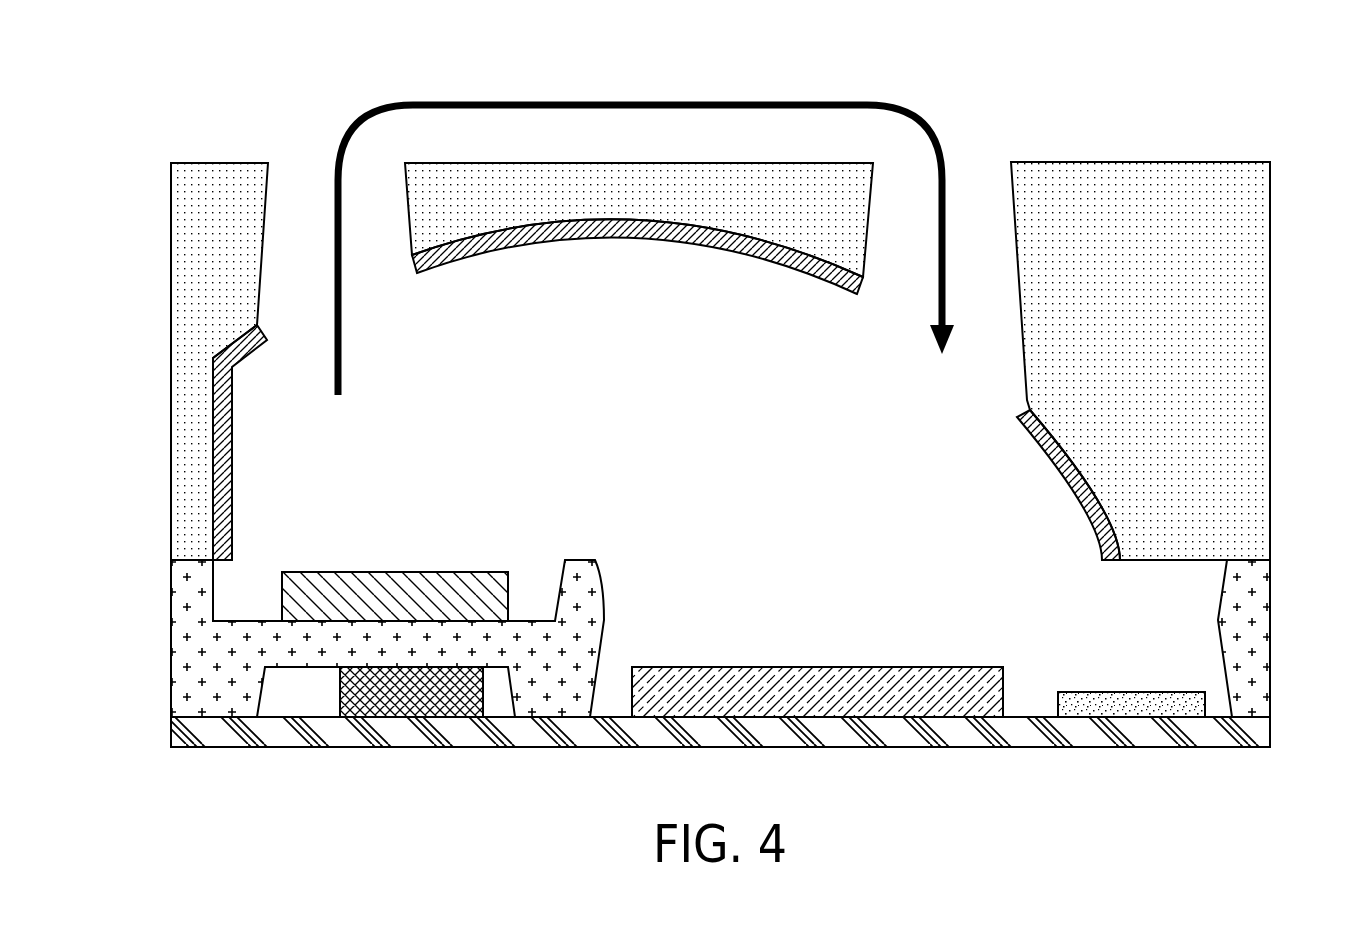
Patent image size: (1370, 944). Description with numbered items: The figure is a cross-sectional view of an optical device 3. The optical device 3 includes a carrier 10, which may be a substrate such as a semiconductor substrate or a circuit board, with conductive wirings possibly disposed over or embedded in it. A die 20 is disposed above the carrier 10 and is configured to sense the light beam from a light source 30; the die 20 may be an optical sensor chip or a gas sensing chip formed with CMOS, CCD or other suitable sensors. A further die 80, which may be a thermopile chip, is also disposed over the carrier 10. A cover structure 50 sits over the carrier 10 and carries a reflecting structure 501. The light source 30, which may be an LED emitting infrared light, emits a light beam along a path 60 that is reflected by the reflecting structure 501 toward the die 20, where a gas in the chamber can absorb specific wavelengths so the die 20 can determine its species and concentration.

The optical device 3 is at (90, 72).
The carrier 10 is at (1029, 733).
The die 20 is at (307, 597).
The light source 30 is at (817, 695).
The cover structure 50 is at (757, 361).
The reflecting structure 501 is at (461, 258).
The path 60 is at (847, 352).
The die 80 is at (410, 697).